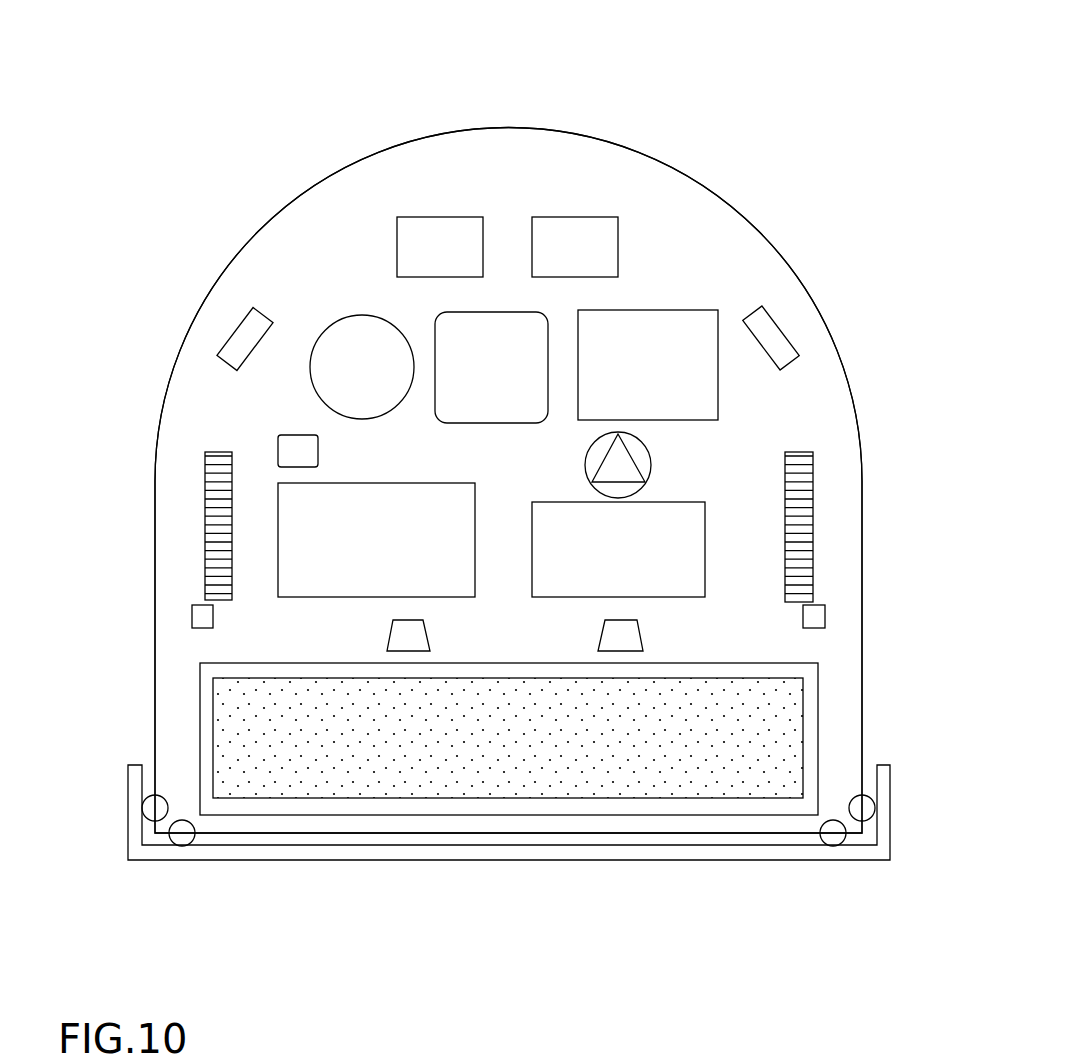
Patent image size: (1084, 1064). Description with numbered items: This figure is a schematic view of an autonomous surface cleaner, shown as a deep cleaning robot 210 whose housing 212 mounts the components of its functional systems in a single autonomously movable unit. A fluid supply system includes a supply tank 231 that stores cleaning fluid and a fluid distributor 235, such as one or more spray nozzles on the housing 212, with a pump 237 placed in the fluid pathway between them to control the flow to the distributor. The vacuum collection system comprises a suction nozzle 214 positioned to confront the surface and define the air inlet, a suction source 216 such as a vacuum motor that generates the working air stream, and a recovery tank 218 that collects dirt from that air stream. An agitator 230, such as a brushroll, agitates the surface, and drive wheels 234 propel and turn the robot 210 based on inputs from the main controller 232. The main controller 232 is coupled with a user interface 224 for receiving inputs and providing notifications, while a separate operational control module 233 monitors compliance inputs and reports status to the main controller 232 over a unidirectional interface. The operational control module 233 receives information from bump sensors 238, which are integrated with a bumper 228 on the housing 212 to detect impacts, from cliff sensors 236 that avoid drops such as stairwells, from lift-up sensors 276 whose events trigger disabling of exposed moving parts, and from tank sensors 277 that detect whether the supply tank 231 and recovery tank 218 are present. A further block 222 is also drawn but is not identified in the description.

The robot 210 is at (713, 82).
The housing 212 is at (173, 367).
The suction nozzle 214 is at (505, 815).
The suction source 216 is at (340, 317).
The recovery tank 218 is at (410, 483).
The controller 222 is at (650, 310).
The user interface 224 is at (510, 310).
The bumper 228 is at (355, 855).
The agitator 230 is at (290, 800).
The supply tank 231 is at (530, 577).
The main controller 232 is at (413, 215).
The operational control module 233 is at (562, 217).
The drive wheels 234 is at (205, 488).
The fluid distributor 235 is at (600, 630).
The cliff sensors 236 is at (237, 330).
The pump 237 is at (648, 447).
The bump sensors 238 is at (143, 810).
The lift-up sensors 276 is at (190, 615).
The tank sensors 277 is at (290, 435).